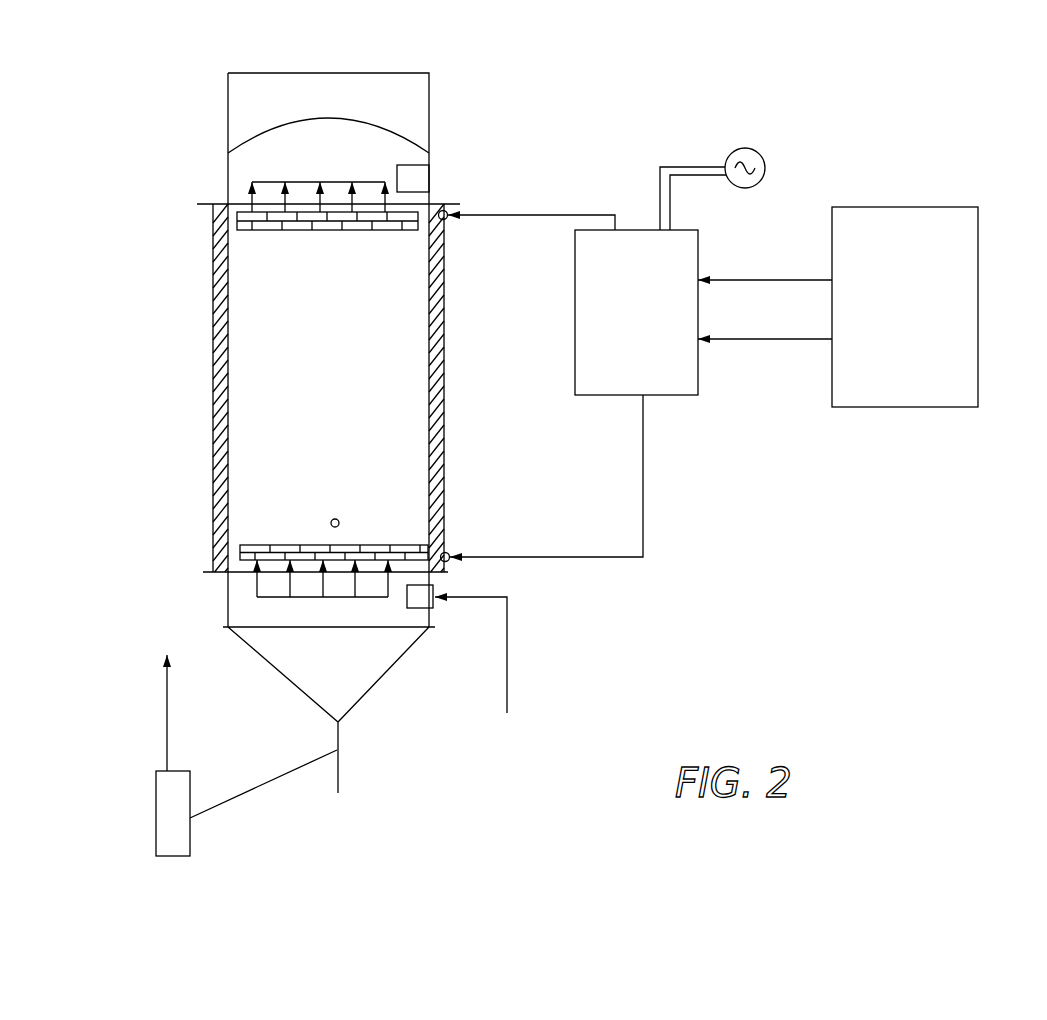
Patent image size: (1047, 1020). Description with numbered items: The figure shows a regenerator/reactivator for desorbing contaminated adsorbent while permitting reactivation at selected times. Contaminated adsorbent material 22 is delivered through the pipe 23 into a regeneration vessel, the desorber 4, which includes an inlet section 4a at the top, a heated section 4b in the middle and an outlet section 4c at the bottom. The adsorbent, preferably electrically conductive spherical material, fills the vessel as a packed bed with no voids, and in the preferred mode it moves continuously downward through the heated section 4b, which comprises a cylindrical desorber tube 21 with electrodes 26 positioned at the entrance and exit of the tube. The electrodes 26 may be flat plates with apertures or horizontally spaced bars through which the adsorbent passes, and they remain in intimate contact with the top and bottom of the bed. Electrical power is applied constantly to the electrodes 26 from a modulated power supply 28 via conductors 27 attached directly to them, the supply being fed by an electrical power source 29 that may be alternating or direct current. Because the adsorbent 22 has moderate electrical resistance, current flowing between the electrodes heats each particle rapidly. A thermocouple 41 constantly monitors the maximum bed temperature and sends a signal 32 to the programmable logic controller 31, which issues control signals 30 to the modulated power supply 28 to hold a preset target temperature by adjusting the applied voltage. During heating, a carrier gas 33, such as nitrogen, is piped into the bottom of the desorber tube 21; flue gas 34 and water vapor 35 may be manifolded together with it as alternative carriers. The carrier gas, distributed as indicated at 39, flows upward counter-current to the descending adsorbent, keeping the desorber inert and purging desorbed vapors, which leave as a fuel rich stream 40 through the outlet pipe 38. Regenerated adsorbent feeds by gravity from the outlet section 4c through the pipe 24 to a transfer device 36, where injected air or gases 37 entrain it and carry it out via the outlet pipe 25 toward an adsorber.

The desorber 4 is at (213, 407).
The inlet section 4a is at (183, 75).
The heated section 4b is at (112, 263).
The outlet section 4c is at (200, 585).
The cylindrical desorber tube 21 is at (213, 344).
The adsorbent material 22 is at (327, 290).
The pipe 23 is at (328, 118).
The pipe 24 is at (265, 787).
The outlet pipe 25 is at (167, 716).
The electrodes 26 is at (320, 230).
The conductors 27 is at (590, 213).
The modulated power supply 28 is at (665, 397).
The electrical power source 29 is at (752, 140).
The control signals 30 is at (800, 338).
The programmable logic controller 31 is at (973, 260).
The signal 32 is at (910, 407).
The carrier gas 33 is at (464, 666).
The flue gas 34 is at (507, 631).
The water vapor 35 is at (507, 681).
The transfer device 36 is at (156, 817).
The air or gases 37 is at (172, 856).
The outlet pipe 38 is at (429, 180).
The carrier gas 39 is at (380, 590).
The fuel rich stream 40 is at (363, 193).
The thermocouple 41 is at (331, 523).